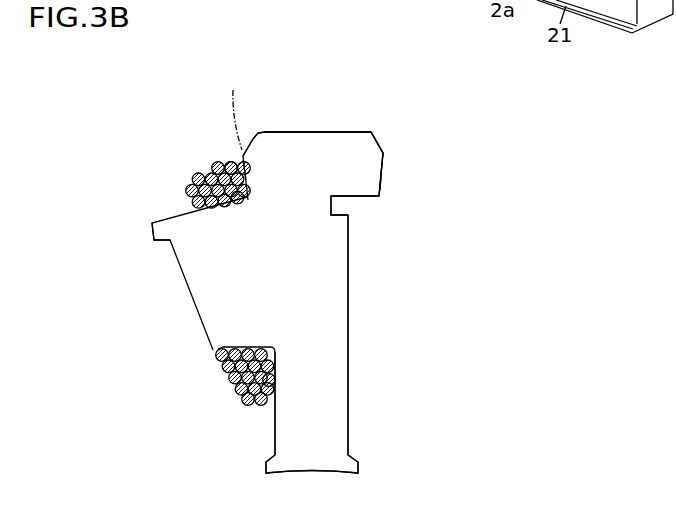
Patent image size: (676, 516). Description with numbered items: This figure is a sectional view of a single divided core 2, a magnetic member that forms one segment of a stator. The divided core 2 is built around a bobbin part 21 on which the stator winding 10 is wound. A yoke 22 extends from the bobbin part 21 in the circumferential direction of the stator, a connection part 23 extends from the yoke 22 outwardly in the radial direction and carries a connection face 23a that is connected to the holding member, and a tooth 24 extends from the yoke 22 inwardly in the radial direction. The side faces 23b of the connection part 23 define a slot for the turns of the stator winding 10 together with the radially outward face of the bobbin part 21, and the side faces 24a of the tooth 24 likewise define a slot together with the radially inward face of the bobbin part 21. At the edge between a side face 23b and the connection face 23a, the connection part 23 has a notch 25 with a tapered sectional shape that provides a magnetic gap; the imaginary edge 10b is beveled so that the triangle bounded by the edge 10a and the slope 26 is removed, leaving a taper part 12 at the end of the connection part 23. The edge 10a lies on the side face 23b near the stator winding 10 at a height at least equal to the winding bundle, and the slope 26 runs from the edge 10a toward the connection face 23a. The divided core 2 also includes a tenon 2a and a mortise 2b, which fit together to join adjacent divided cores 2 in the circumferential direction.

The divided core 2 is at (478, 143).
The tenon 2a is at (156, 222).
The mortise 2b is at (333, 205).
The stator winding 10 is at (188, 182).
The edge 10a is at (242, 156).
The imaginary edge 10b is at (236, 109).
The taper part 12 is at (393, 143).
The bobbin part 21 is at (225, 270).
The yoke 22 is at (357, 329).
The connection part 23 is at (391, 172).
The connection face 23a is at (330, 131).
The side face 23b is at (381, 178).
The tooth 24 is at (357, 419).
The side face of the tooth 24a is at (272, 423).
The notch 25 is at (380, 142).
The slope 26 is at (263, 134).